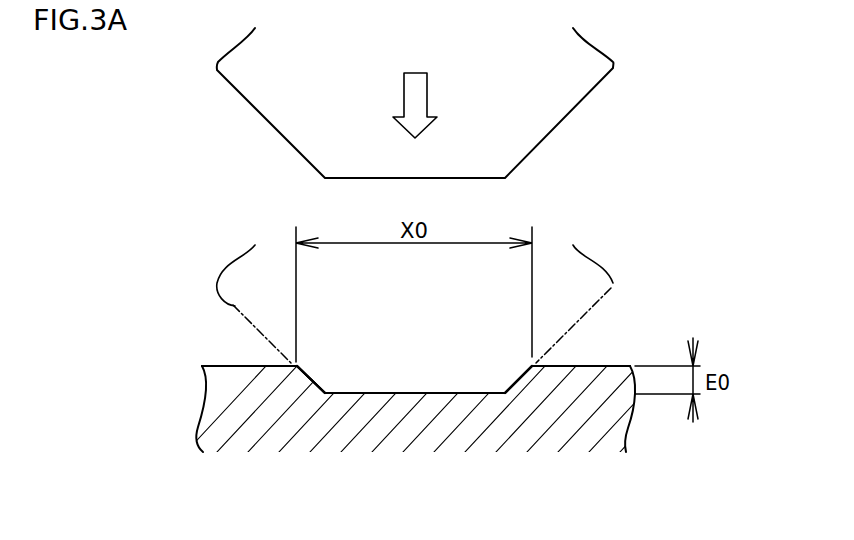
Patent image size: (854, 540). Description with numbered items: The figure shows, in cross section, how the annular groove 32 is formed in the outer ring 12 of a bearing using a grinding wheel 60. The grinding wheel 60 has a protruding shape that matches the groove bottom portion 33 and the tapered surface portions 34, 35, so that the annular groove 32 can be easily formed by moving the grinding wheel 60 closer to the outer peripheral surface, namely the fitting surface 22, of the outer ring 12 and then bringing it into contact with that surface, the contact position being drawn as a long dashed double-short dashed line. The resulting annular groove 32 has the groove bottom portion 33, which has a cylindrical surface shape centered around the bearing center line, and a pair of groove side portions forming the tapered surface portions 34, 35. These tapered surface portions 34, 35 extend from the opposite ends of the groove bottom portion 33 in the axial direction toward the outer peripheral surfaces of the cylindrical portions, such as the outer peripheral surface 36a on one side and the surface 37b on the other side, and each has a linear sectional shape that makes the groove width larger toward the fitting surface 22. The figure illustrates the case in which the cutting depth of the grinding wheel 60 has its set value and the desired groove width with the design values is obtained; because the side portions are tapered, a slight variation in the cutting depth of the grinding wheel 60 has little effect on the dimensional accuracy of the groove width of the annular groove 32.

The outer ring 12 is at (266, 422).
The fitting surface 22 is at (639, 352).
The annular groove 32 is at (428, 378).
The groove bottom portion 33 is at (383, 393).
The tapered surface portion 34 is at (312, 373).
The tapered surface portion 35 is at (518, 378).
The outer peripheral surface of cylindrical portion 36a is at (220, 365).
The second flat surface portion 37b is at (632, 356).
The grinding wheel 60 is at (255, 108).